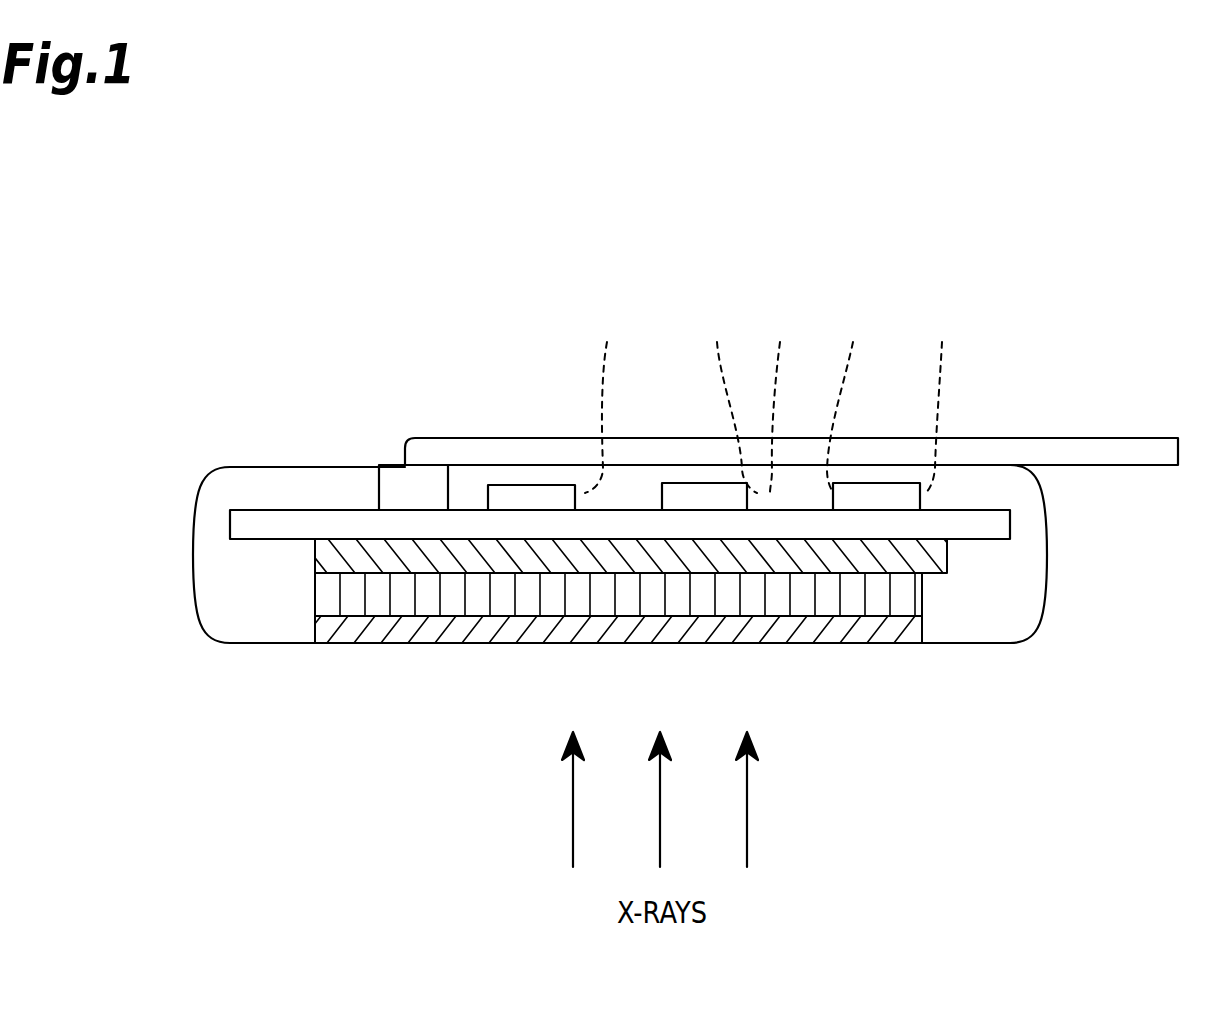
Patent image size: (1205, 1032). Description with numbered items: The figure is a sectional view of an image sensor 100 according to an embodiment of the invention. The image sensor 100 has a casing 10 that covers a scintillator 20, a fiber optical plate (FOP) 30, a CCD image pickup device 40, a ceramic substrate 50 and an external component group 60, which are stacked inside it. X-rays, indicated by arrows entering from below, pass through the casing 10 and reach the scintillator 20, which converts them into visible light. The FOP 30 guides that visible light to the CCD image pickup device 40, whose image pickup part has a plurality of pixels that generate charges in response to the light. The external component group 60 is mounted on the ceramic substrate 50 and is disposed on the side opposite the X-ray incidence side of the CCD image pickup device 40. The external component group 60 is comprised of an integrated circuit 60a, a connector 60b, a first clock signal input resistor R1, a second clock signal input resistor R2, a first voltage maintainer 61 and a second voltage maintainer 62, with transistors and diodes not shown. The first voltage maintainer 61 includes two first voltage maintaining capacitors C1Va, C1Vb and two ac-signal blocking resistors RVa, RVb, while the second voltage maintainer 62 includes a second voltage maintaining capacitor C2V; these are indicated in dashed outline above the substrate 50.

The image sensor 100 is at (1013, 257).
The casing 10 is at (1046, 590).
The scintillator 20 is at (878, 618).
The fiber optical plate (FOP) 30 is at (478, 598).
The CCD image pickup device 40 is at (333, 555).
The ceramic substrate 50 is at (247, 528).
The external component group 60 is at (353, 242).
The integrated circuit 60a is at (535, 495).
The connector 60b is at (396, 482).
The first voltage maintainer 61 is at (980, 297).
The second voltage maintainer 62 is at (652, 300).
The first clock signal input resistor R1 is at (690, 495).
The second clock signal input resistor R2 is at (885, 493).
The second voltage maintaining capacitor C2V is at (614, 399).
The first voltage maintaining capacitor C1Va is at (715, 399).
The ac-signal blocking resistor RVa is at (795, 398).
The ac-signal blocking resistor RVb is at (859, 398).
The first voltage maintaining capacitor C1Vb is at (943, 399).